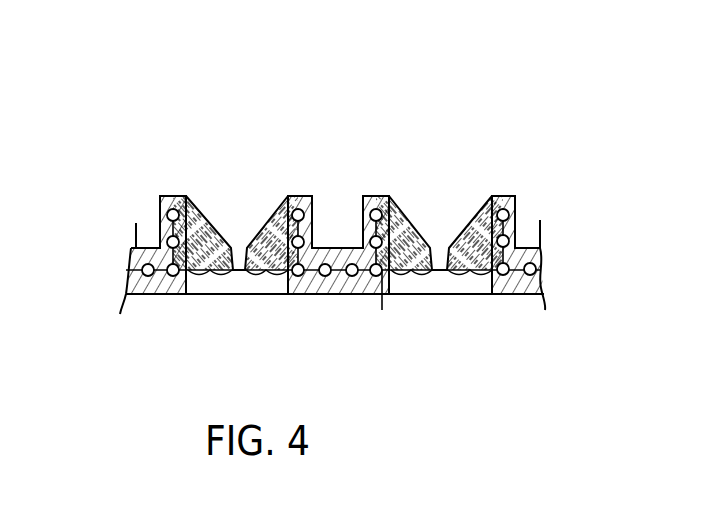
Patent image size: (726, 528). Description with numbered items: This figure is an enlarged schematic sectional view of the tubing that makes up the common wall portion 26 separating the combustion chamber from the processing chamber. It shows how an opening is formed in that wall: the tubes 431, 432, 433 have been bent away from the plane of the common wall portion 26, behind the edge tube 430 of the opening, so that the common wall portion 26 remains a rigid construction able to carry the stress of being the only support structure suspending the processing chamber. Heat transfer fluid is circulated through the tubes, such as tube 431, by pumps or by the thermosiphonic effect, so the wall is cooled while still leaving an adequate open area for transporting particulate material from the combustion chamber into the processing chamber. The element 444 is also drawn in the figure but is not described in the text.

The common wall portion 26 is at (191, 111).
The edge tube 430 is at (178, 272).
The tube 431 is at (200, 272).
The tube 432 is at (239, 250).
The tube 433 is at (247, 246).
The channel 444 is at (262, 273).